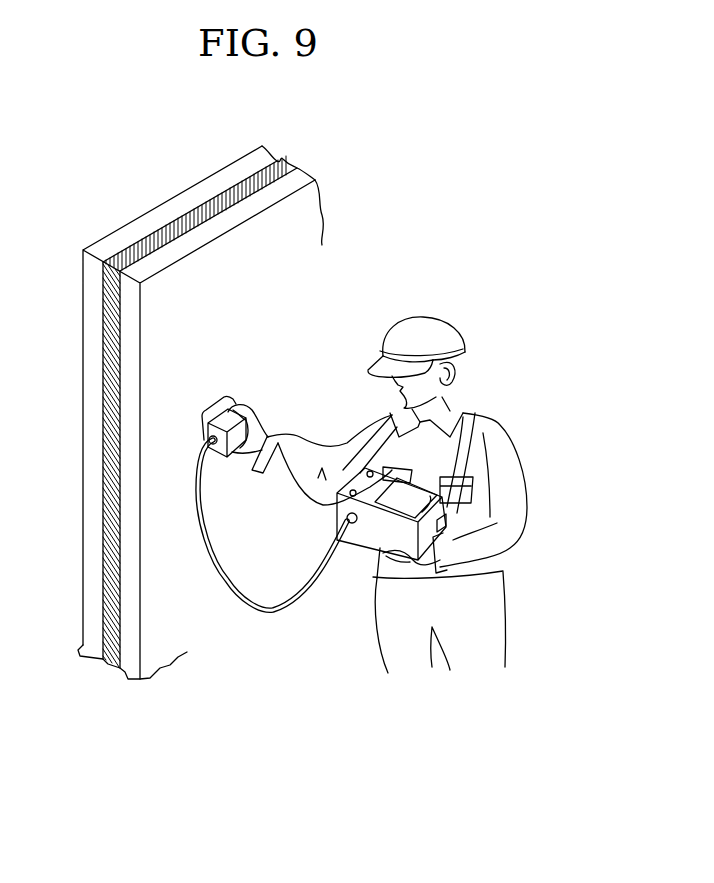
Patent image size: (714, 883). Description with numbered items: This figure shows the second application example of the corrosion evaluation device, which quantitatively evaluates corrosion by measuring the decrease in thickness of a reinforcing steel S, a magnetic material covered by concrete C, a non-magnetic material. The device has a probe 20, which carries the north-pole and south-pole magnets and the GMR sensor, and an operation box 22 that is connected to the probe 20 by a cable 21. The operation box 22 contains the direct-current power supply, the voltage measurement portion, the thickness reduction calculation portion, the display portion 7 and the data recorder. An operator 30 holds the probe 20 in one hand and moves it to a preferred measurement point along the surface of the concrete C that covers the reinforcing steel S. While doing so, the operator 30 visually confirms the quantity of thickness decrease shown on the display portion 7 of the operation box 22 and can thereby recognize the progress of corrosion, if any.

The display portion 7 is at (460, 570).
The probe 20 is at (247, 437).
The cable 21 is at (247, 614).
The operation box 22 is at (355, 543).
The operator 30 is at (420, 316).
The concrete C is at (90, 642).
The reinforcing steel S is at (107, 660).